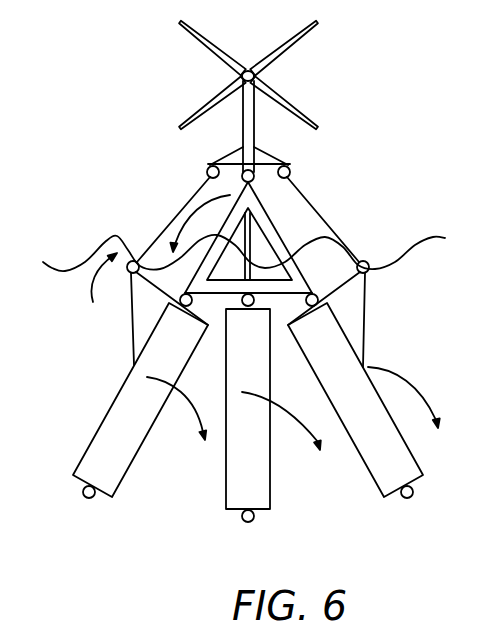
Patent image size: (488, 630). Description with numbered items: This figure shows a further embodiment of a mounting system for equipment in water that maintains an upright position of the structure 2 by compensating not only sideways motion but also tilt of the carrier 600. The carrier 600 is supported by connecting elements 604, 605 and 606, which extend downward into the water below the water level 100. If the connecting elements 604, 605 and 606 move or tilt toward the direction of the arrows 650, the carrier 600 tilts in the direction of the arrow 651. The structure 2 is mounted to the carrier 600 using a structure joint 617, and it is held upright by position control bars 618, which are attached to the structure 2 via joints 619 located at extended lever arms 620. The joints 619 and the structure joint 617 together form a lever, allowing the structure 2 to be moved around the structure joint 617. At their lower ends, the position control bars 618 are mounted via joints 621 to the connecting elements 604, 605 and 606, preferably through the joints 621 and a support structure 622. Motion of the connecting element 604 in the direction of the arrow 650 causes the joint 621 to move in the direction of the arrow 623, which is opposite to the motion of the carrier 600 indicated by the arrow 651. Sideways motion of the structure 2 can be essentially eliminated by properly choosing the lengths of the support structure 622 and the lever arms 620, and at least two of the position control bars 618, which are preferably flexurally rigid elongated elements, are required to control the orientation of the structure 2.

The structure 2 is at (243, 76).
The water level 100 is at (60, 272).
The carrier 600 is at (273, 232).
The connecting element 604 is at (108, 425).
The connecting element 605 is at (228, 490).
The connecting element 606 is at (370, 457).
The structure joint 617 is at (264, 165).
The position control bars 618 is at (197, 188).
The joints 619 is at (208, 165).
The extended lever arms 620 is at (228, 157).
The joints 621 is at (129, 262).
The support structure 622 is at (122, 275).
The arrow 623 is at (92, 268).
The arrows 650 is at (197, 402).
The arrow 651 is at (183, 218).